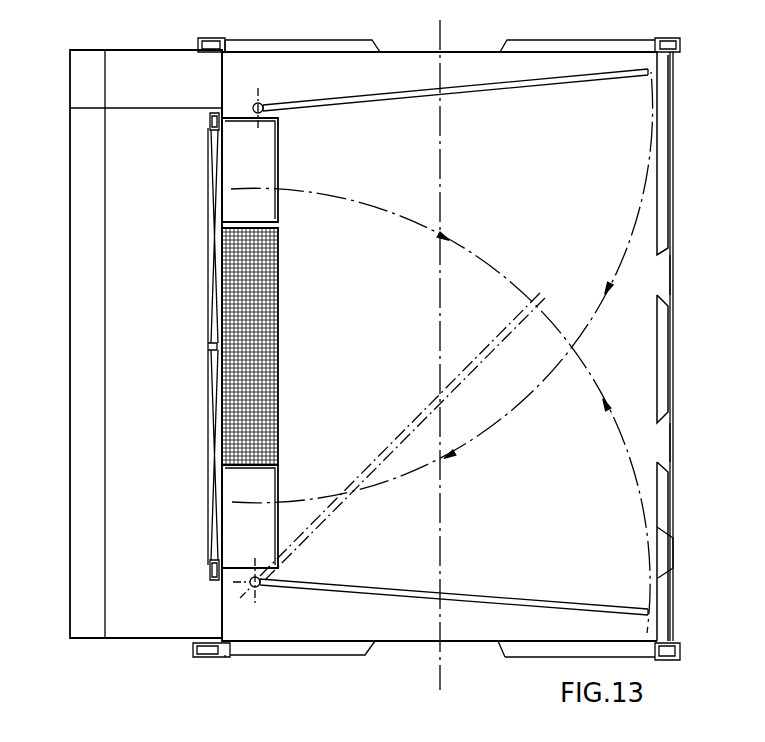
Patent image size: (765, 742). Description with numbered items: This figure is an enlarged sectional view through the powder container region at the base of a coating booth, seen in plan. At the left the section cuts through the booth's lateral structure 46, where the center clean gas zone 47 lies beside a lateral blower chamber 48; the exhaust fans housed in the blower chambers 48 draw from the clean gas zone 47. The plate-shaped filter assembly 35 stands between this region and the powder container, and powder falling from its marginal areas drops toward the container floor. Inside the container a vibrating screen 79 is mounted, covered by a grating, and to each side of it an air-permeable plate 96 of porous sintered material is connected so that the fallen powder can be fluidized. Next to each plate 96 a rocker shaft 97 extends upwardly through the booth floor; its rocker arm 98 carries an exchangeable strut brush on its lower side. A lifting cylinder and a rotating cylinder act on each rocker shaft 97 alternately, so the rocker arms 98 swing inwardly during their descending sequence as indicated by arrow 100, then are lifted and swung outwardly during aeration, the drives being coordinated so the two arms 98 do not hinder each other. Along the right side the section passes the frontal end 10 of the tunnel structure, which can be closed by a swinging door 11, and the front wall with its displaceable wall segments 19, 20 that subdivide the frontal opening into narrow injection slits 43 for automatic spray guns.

The frontal end 10 is at (432, 40).
The swinging door 11 is at (270, 46).
The wall segment 19 is at (676, 565).
The wall segment 20 is at (663, 367).
The filter assembly 35 is at (202, 528).
The injection slit 43 is at (672, 273).
The side box 46 is at (160, 110).
The clean gas zone 47 is at (165, 372).
The blower chamber 48 is at (146, 79).
The vibrating screen 79 is at (270, 290).
The air-permeable plate 96 is at (262, 172).
The rocker shaft 97 is at (265, 338).
The rocker arm 98 is at (557, 80).
The arrow 100 is at (442, 352).